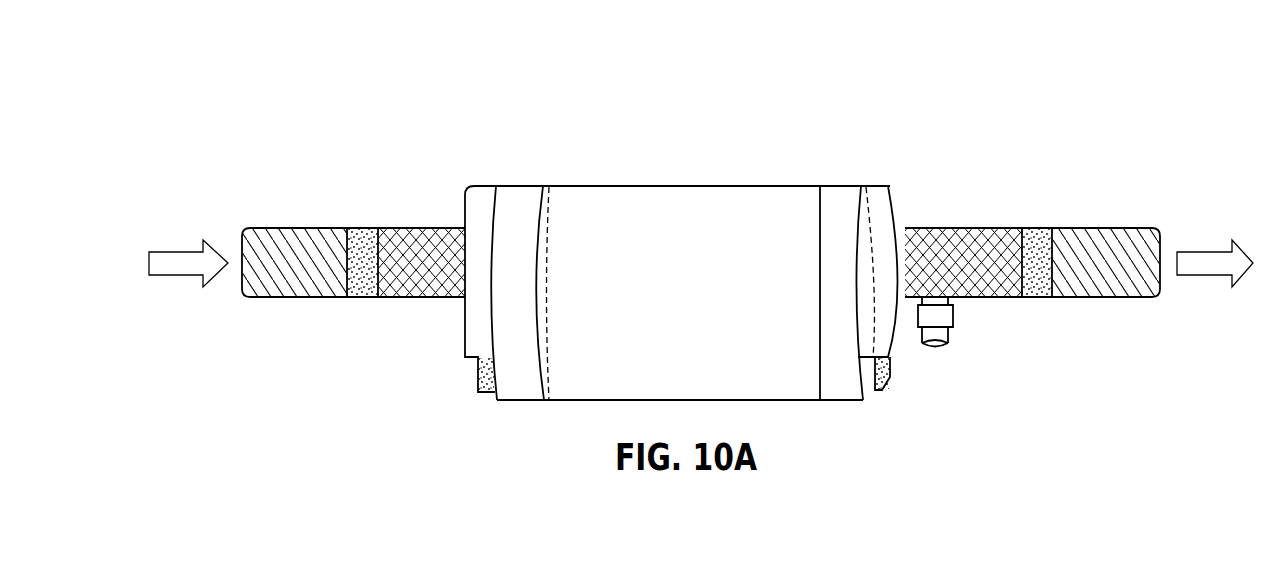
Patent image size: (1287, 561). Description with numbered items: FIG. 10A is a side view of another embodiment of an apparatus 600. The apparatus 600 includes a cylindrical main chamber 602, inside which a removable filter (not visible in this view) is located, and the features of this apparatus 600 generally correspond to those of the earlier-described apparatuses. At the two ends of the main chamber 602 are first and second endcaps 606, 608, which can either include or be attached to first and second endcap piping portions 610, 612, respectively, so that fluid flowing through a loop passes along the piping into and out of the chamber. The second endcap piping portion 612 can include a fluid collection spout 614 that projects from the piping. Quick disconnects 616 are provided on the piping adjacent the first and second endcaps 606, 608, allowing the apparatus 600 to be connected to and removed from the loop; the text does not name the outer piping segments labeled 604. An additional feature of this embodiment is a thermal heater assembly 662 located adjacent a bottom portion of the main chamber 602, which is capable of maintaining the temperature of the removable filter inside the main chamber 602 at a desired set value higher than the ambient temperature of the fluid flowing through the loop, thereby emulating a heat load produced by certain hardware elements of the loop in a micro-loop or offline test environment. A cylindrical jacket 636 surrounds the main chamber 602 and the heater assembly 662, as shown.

The apparatus 600 is at (713, 44).
The cylindrical main chamber 602 is at (692, 186).
The pipe / conduit section 604 is at (314, 276).
The first endcap 606 is at (482, 203).
The second endcap 608 is at (896, 210).
The first endcap piping portion 610 is at (444, 276).
The second endcap piping portion 612 is at (979, 276).
The fluid collection spout 614 is at (947, 320).
The quick disconnects 616 is at (362, 240).
The cylindrical jacket 636 is at (517, 197).
The thermal heater assembly 662 is at (891, 372).